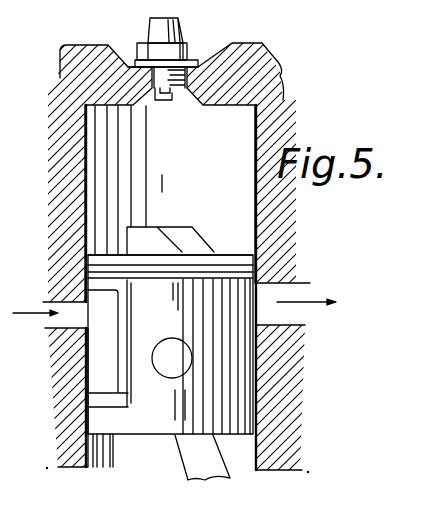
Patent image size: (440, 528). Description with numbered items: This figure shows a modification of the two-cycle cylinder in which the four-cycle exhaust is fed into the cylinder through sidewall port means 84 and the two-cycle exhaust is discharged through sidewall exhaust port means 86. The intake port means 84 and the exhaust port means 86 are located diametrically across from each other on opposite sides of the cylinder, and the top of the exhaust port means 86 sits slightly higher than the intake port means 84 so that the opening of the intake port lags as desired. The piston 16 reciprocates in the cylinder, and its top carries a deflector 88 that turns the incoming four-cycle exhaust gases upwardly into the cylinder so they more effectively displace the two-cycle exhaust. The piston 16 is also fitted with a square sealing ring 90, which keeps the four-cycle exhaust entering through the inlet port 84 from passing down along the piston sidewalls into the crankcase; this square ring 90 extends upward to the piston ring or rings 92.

The piston 16 is at (247, 388).
The sidewall port means 84 is at (35, 348).
The sidewall exhaust port means 86 is at (308, 292).
The deflector 88 is at (193, 227).
The square sealing ring 90 is at (128, 400).
The piston ring 92 is at (97, 272).